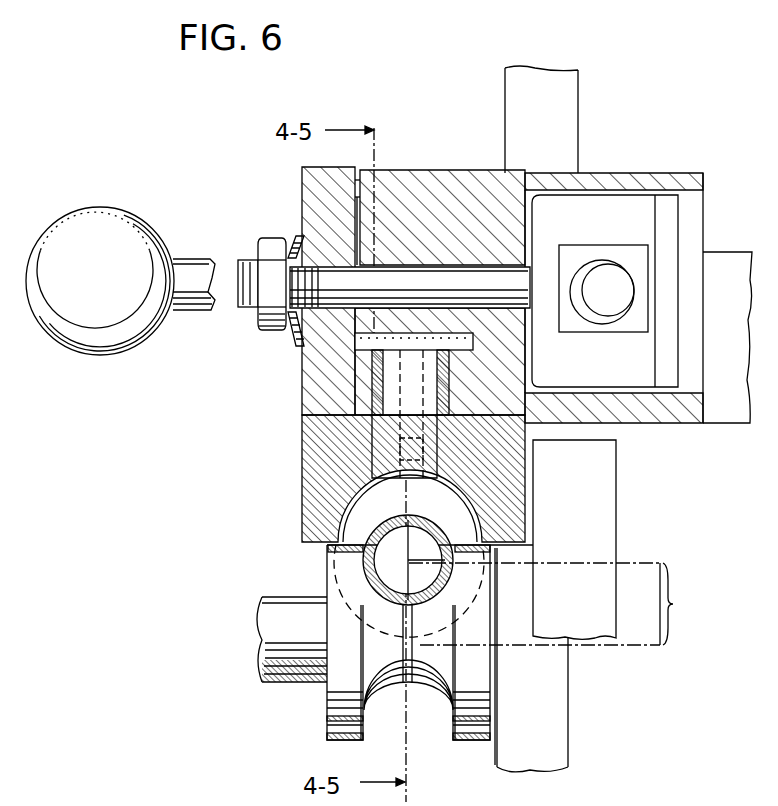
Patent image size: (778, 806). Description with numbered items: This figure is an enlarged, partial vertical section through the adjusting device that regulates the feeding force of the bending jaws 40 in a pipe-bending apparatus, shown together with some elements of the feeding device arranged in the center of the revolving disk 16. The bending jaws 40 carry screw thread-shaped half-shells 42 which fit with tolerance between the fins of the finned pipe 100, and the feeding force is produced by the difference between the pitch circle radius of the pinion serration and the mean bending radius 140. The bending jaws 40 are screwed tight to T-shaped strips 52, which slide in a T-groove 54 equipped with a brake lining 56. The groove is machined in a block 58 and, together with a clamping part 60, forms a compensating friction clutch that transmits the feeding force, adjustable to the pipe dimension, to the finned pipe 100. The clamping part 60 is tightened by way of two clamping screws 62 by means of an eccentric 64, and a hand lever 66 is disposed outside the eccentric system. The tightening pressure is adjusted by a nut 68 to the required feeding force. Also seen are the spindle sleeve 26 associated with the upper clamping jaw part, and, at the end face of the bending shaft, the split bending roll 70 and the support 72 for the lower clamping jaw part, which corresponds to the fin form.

The revolving disk 16 is at (505, 82).
The spindle sleeve 26 is at (268, 622).
The bending jaws 40 is at (306, 465).
The screw thread-shaped half-shells 42 is at (336, 545).
The T-shaped strips 52 is at (372, 365).
The T-groove 54 is at (473, 333).
The brake lining 56 is at (380, 388).
The block 58 is at (443, 182).
The clamping part 60 is at (310, 186).
The clamping screws 62 is at (384, 284).
The eccentric 64 is at (600, 272).
The hand lever 66 is at (148, 246).
The nut 68 is at (270, 240).
The split bending roll 70 is at (330, 720).
The support 72 is at (600, 487).
The finned pipe 100 is at (366, 557).
The mean bending radius 140 is at (568, 604).